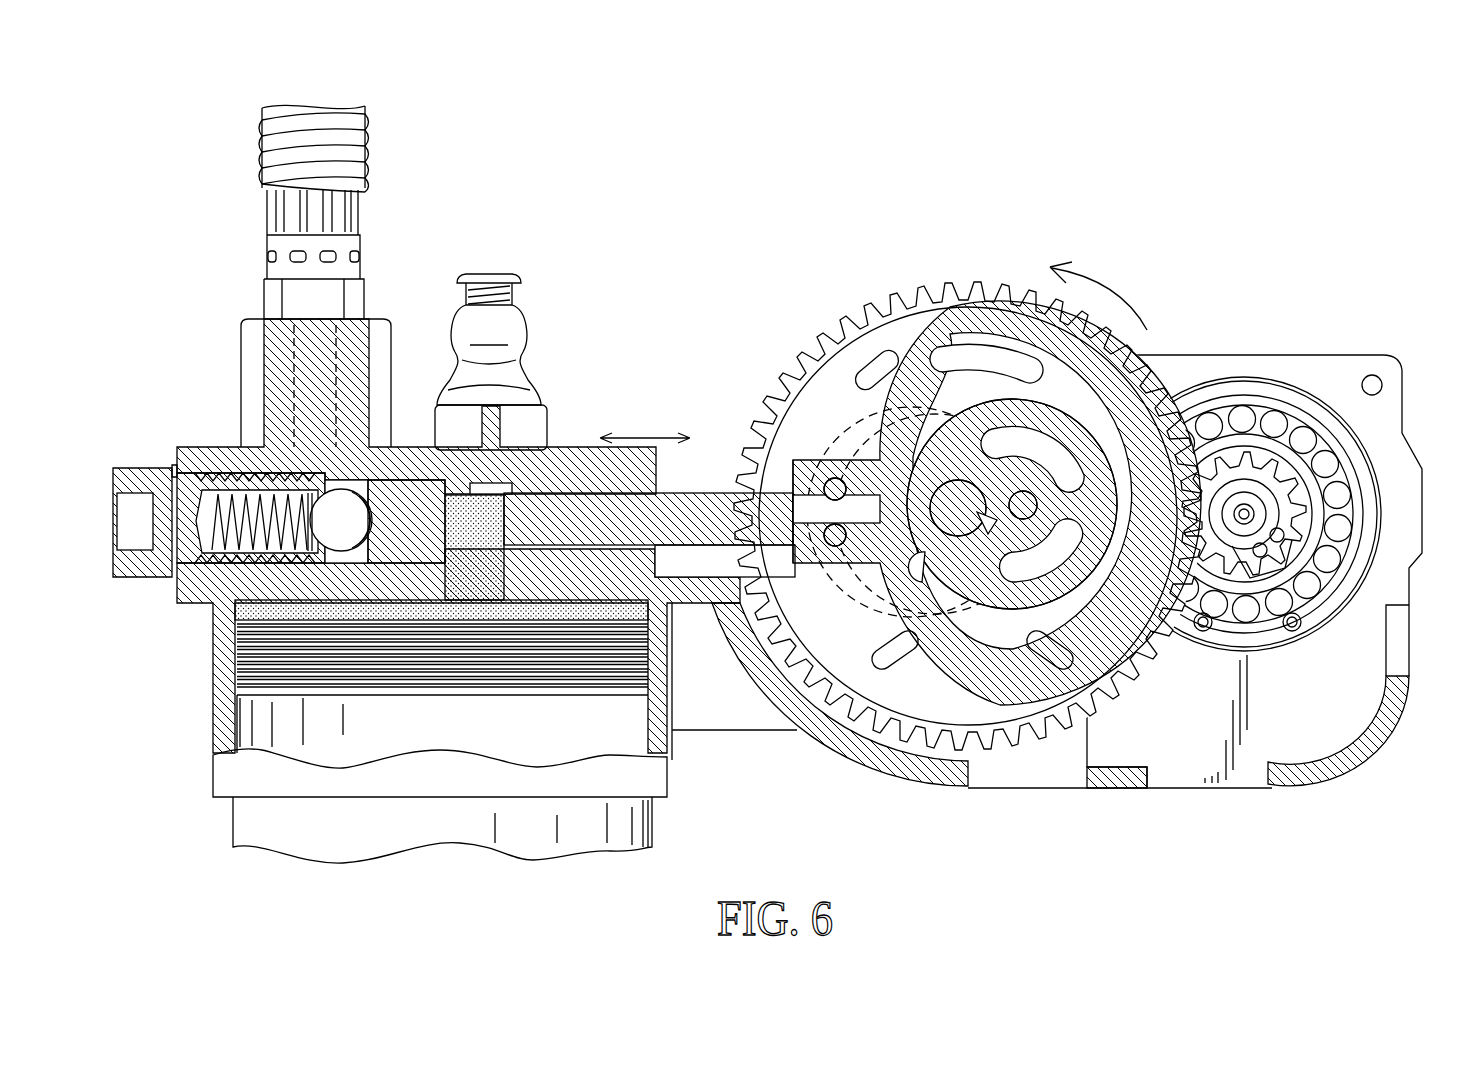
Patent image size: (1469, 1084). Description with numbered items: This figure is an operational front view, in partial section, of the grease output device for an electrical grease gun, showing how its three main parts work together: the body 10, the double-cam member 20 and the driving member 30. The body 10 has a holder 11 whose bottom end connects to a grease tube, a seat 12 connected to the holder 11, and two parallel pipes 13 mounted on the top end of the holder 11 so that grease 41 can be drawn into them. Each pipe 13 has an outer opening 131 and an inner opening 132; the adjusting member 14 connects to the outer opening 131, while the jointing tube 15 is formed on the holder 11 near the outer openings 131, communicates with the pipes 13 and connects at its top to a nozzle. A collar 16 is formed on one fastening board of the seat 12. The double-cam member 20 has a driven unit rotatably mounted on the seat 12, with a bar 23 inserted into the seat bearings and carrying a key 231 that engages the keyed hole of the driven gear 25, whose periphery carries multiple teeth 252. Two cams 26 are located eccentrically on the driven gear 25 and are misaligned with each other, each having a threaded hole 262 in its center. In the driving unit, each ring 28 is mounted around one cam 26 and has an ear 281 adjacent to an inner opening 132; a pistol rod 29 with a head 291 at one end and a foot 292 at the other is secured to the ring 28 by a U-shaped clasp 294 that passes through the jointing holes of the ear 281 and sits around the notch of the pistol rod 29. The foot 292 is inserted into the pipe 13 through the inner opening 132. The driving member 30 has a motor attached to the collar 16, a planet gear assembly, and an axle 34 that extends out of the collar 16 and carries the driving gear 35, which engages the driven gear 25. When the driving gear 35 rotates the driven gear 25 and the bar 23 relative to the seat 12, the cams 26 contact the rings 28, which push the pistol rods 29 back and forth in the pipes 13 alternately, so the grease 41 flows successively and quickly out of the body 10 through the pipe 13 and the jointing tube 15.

The body 10 is at (162, 751).
The holder 11 is at (592, 842).
The seat 12 is at (1340, 762).
The pipe 13 is at (570, 447).
The outer opening 131 is at (172, 466).
The inner opening 132 is at (658, 478).
The adjusting member 14 is at (134, 592).
The jointing tube 15 is at (245, 355).
The collar 16 is at (1315, 365).
The double-cam member 20 is at (820, 276).
The bar 23 is at (950, 520).
The key 231 is at (985, 528).
The driven gear 25 is at (875, 330).
The teeth 252 is at (930, 290).
The cam 26 is at (1090, 610).
The threaded hole 262 is at (1024, 515).
The ring 28 is at (1000, 318).
The ear 281 is at (824, 478).
The pistol rod 29 is at (585, 535).
The head 291 is at (833, 546).
The foot 292 is at (490, 540).
The U-shaped clasp 294 is at (795, 560).
The driving member 30 is at (1433, 376).
The axle 34 is at (1228, 528).
The driving gear 35 is at (1250, 562).
The grease 41 is at (460, 515).